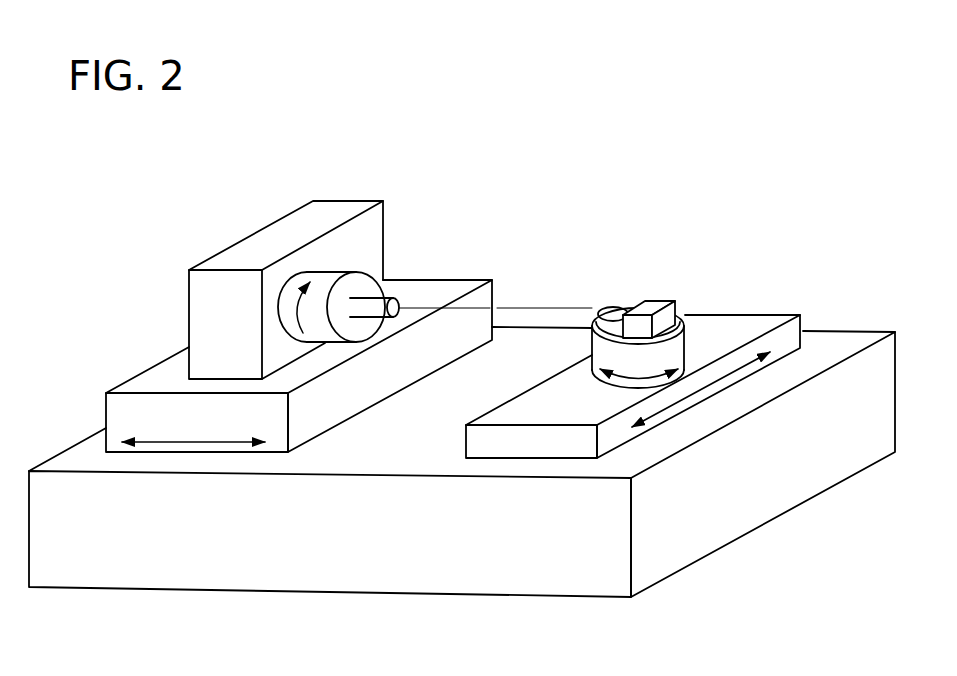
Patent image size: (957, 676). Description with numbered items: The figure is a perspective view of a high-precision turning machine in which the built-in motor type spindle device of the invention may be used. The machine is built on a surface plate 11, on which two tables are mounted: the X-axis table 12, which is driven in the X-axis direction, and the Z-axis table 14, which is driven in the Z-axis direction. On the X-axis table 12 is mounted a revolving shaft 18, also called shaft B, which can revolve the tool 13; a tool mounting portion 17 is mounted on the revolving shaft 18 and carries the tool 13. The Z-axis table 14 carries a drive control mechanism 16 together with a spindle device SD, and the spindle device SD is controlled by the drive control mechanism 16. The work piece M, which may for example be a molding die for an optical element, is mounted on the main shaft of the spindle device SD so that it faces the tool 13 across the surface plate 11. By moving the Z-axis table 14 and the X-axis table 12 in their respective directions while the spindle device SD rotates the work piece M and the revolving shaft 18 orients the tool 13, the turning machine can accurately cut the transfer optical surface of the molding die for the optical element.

The surface plate 11 is at (759, 507).
The X-axis table 12 is at (760, 322).
The tool 13 is at (617, 311).
The Z-axis table 14 is at (115, 410).
The drive control mechanism 16 is at (347, 210).
The tool mounting portion 17 is at (652, 300).
The revolving shaft 18 is at (690, 336).
The spindle device SD is at (338, 268).
The work piece M is at (386, 296).